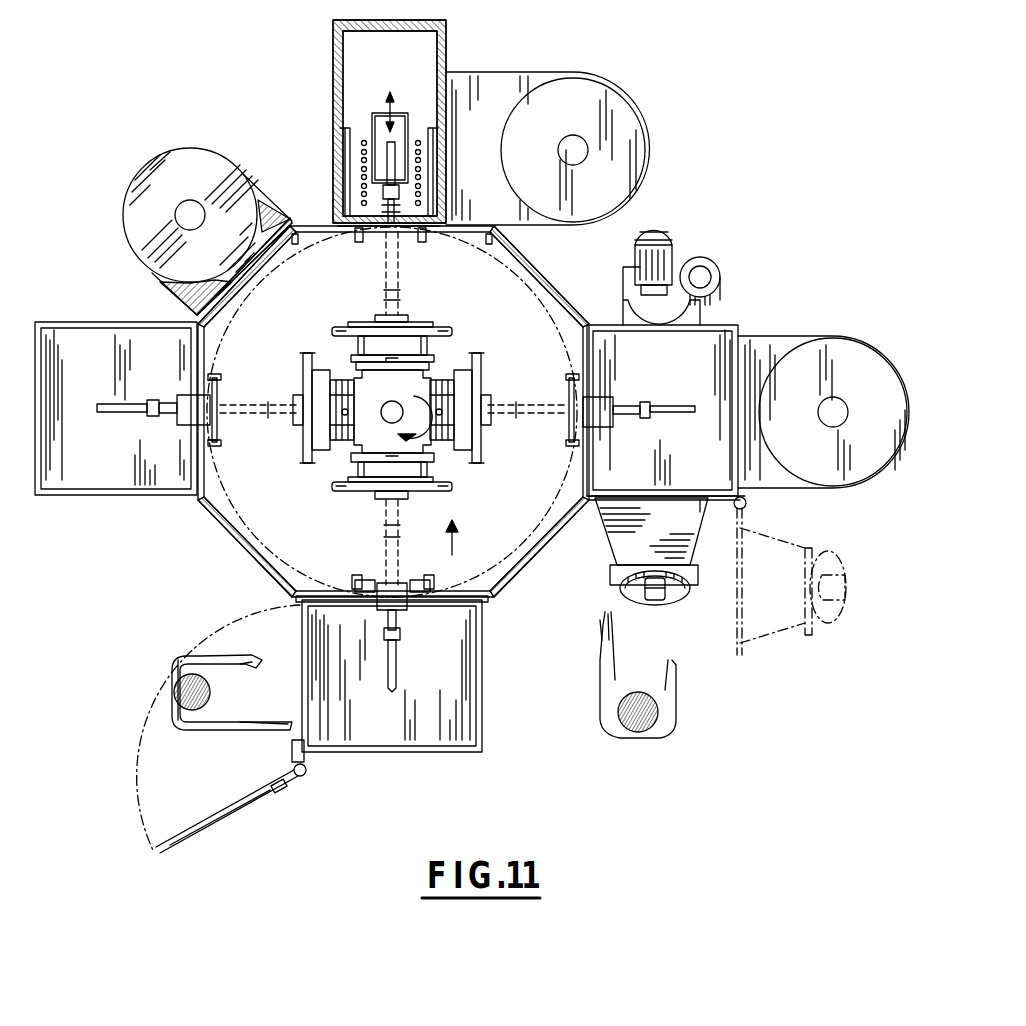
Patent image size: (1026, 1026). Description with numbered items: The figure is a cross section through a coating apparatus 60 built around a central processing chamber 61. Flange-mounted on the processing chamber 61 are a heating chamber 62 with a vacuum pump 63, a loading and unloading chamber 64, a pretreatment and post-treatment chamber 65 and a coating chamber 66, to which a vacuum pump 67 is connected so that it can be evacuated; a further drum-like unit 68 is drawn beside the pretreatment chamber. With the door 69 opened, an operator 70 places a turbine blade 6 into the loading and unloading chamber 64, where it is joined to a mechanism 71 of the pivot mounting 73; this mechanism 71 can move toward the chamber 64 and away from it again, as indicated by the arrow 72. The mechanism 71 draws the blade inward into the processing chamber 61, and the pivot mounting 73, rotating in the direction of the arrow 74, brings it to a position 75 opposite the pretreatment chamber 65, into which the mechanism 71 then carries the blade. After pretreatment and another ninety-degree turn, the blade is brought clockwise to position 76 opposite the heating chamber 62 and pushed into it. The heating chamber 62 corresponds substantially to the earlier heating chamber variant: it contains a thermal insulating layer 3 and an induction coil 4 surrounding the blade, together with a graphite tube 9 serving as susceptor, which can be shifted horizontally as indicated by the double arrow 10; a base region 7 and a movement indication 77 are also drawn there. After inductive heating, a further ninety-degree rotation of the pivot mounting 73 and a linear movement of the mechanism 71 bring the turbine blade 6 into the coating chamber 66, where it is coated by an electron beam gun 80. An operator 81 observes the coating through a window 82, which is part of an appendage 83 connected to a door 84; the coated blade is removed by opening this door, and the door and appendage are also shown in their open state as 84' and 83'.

The coating apparatus 60 is at (186, 62).
The processing chamber 61 is at (548, 282).
The heating chamber 62 is at (448, 42).
The vacuum pump 63 is at (618, 107).
The loading and unloading chamber 64 is at (486, 686).
The pretreatment and post-treatment chamber 65 is at (105, 496).
The coating chamber 66 is at (722, 326).
The vacuum pump 67 is at (845, 342).
The roll 68 is at (135, 202).
The door 69 is at (212, 816).
The operator 70 is at (174, 680).
The mechanism 71 is at (428, 466).
The arrow 72 is at (452, 545).
The pivot mounting 73 is at (422, 388).
The arrow 74 is at (418, 416).
The position 75 is at (292, 336).
The position 76 is at (448, 276).
The movement direction 77 is at (412, 72).
The electron beam gun 80 is at (669, 244).
The operator 81 is at (636, 732).
The window 82 is at (632, 603).
The appendage 83 is at (638, 535).
The door 84 is at (713, 536).
The appendage in open state 83' is at (793, 573).
The door in open state 84' is at (718, 581).
The thermal insulating layer 3 is at (345, 128).
The induction coil 4 is at (360, 158).
The turbine blade 6 is at (92, 462).
The base 7 is at (384, 202).
The graphite tube 9 is at (410, 120).
The double arrow 10 is at (388, 108).